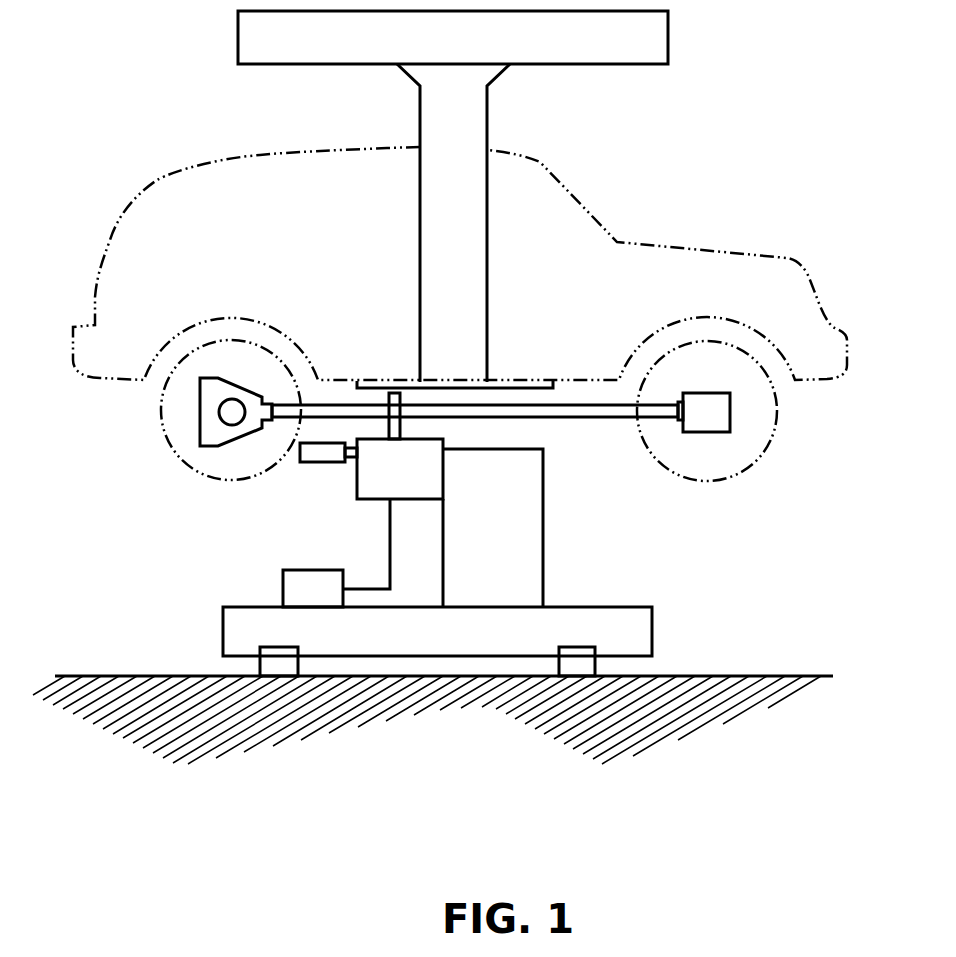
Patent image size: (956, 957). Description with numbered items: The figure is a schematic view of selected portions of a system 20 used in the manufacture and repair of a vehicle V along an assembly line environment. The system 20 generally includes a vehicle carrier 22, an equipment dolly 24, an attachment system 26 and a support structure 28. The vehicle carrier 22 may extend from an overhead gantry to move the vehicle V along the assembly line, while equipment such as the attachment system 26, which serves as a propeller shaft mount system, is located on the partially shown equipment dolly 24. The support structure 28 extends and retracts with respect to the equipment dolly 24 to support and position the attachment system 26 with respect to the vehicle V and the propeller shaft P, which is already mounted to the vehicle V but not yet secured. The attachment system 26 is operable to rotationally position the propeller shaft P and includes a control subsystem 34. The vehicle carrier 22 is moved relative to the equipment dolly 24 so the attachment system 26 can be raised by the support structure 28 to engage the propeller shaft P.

The system 20 is at (697, 168).
The vehicle carrier 22 is at (670, 47).
The equipment dolly 24 is at (653, 640).
The attachment system 26 is at (371, 469).
The support structure 28 is at (493, 528).
The control subsystem 34 is at (336, 553).
The vehicle V is at (797, 258).
The propeller shaft P is at (603, 415).